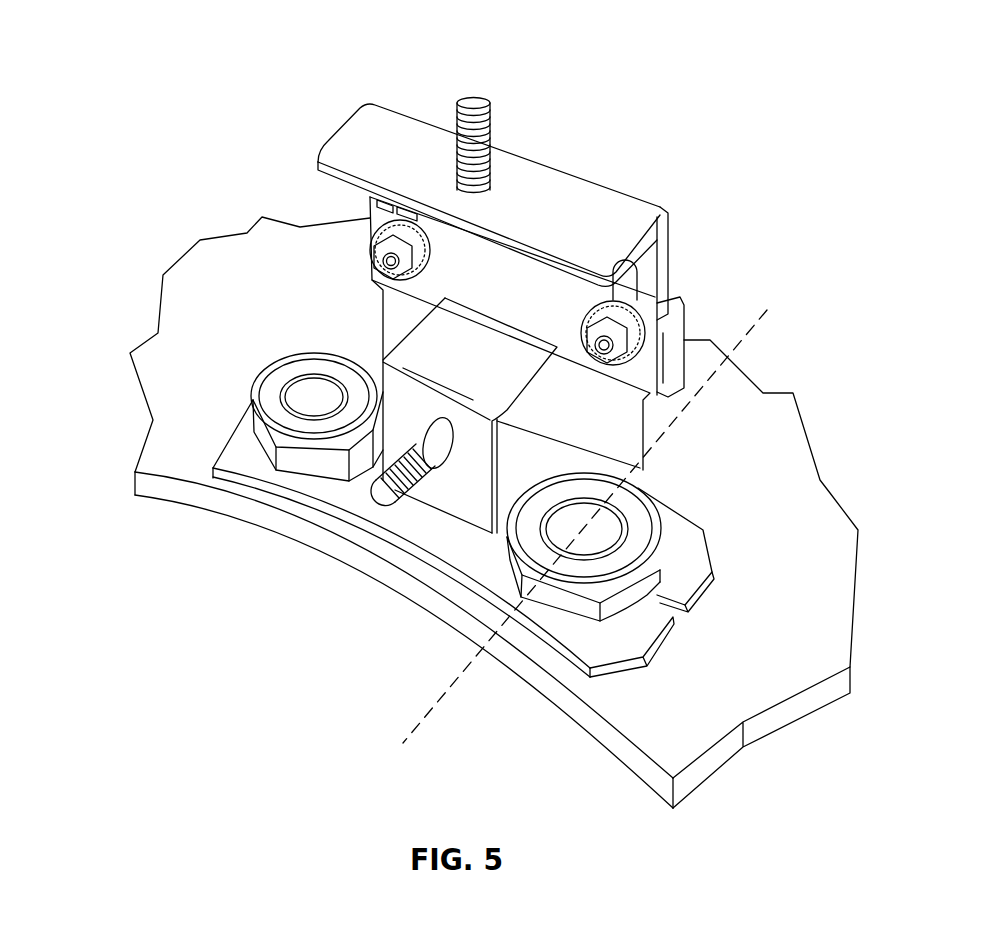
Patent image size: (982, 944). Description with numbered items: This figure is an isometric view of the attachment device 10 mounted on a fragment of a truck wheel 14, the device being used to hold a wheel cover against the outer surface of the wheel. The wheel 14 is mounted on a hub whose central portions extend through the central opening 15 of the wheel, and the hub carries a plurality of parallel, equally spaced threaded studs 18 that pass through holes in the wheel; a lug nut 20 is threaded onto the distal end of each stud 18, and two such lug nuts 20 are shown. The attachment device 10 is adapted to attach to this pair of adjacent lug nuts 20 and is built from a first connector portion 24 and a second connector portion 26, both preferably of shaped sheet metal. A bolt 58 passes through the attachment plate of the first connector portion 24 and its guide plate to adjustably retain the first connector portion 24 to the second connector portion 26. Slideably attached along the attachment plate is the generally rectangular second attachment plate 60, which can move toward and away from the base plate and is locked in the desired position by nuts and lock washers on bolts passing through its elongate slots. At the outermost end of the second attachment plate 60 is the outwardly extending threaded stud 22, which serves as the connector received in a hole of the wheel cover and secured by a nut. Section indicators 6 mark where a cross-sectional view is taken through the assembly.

The attachment device 10 is at (312, 114).
The truck wheel 14 is at (858, 585).
The central opening 15 is at (162, 503).
The threaded studs 18 is at (557, 535).
The lug nut 20 is at (253, 381).
The threaded stud 22 is at (497, 113).
The first connector portion 24 is at (663, 493).
The second connector portion 26 is at (618, 673).
The bolt 58 is at (383, 493).
The second attachment plate 60 is at (563, 172).
The section line 6- 6 is at (703, 302).